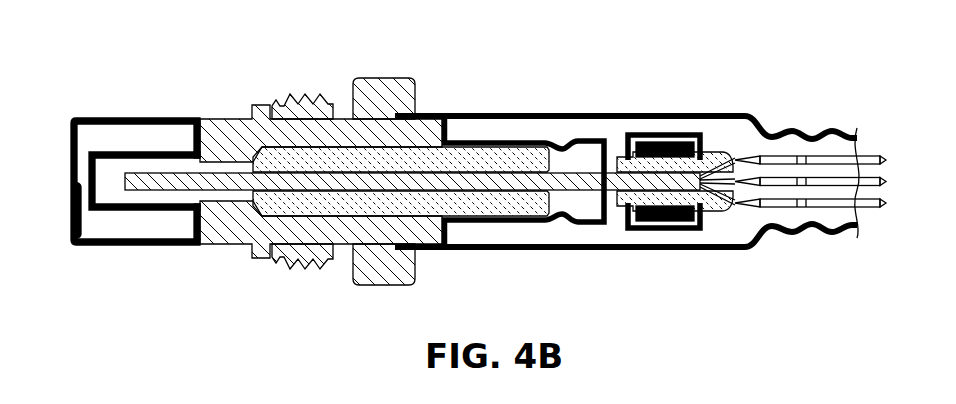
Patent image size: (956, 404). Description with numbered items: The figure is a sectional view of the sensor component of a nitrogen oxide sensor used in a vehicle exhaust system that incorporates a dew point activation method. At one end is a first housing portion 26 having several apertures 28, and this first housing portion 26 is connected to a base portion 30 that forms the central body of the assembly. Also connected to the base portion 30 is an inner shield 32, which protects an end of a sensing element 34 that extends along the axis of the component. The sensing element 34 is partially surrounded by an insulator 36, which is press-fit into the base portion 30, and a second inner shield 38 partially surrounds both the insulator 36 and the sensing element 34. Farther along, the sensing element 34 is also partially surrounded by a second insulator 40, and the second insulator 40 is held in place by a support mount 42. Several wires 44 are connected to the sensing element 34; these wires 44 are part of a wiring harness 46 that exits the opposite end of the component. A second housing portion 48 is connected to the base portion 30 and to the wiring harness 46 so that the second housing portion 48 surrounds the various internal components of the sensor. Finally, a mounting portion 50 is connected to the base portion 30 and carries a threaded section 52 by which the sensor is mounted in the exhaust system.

The first housing portion 26 is at (135, 119).
The apertures 28 is at (156, 122).
The base portion 30 is at (228, 140).
The inner shield 32 is at (157, 213).
The sensing element 34 is at (128, 182).
The insulator 36 is at (482, 160).
The second inner shield 38 is at (583, 224).
The second insulator 40 is at (715, 157).
The support mount 42 is at (667, 132).
The wires 44 is at (754, 164).
The wiring harness 46 is at (830, 246).
The second housing portion 48 is at (613, 112).
The mounting portion 50 is at (377, 93).
The threaded section 52 is at (300, 84).